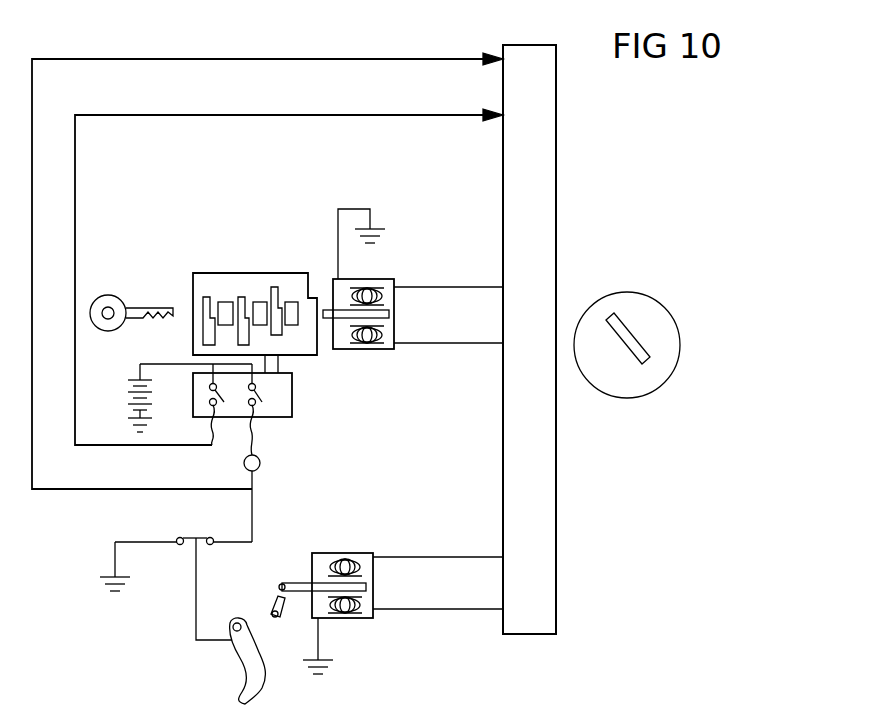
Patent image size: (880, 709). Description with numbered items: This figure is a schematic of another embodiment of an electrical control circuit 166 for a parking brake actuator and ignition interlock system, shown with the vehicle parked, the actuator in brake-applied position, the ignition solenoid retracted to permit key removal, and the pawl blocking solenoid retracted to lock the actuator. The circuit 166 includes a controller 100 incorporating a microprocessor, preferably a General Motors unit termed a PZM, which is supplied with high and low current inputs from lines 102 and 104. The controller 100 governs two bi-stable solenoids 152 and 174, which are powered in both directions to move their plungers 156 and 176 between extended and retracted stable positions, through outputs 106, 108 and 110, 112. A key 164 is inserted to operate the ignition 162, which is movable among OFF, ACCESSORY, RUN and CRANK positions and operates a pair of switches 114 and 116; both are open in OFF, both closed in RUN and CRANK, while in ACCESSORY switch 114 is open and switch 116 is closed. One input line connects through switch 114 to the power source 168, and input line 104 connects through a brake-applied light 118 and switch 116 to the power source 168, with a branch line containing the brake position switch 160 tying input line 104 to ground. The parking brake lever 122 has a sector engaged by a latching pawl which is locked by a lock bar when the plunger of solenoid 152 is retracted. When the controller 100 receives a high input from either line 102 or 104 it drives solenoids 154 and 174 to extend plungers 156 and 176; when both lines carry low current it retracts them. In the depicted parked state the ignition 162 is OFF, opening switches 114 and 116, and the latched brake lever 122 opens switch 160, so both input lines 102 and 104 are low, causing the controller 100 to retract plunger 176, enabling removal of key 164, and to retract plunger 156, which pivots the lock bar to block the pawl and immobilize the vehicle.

The controller 100 is at (543, 131).
The input line 102 is at (247, 58).
The input line 104 is at (262, 115).
The output 106 is at (420, 287).
The output 108 is at (428, 343).
The output 110 is at (407, 557).
The output 112 is at (398, 609).
The switch 114 is at (207, 396).
The switch 116 is at (292, 392).
The brake-applied light 118 is at (260, 458).
The parking brake lever 122 is at (263, 678).
The solenoid 152 is at (355, 618).
The solenoid 154 is at (270, 578).
The plunger 156 is at (268, 604).
The brake position switch 160 is at (190, 537).
The ignition 162 is at (250, 273).
The key 164 is at (110, 295).
The control circuit 166 is at (404, 42).
The power source 168 is at (138, 372).
The solenoid 174 is at (365, 279).
The plunger 176 is at (325, 310).